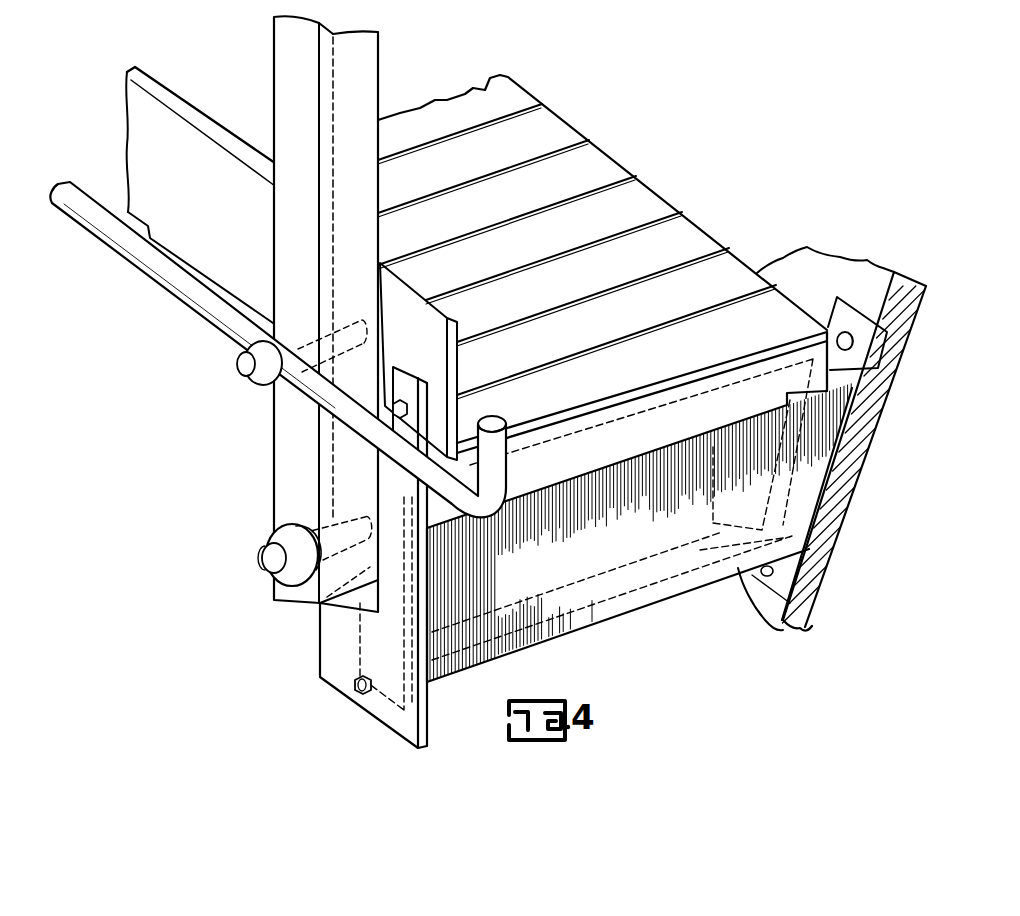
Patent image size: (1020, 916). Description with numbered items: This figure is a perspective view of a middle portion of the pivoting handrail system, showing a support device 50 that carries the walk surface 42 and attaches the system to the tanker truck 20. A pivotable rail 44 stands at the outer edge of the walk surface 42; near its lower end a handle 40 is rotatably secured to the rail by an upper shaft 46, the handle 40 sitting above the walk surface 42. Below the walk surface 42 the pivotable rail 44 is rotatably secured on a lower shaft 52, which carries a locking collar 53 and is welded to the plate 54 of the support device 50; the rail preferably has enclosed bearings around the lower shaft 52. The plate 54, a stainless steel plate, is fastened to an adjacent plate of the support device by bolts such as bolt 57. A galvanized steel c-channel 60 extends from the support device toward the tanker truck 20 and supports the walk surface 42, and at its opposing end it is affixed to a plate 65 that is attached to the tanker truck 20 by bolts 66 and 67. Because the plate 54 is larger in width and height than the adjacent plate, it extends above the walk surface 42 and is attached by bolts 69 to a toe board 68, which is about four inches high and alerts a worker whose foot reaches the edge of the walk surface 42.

The tanker truck 20 is at (820, 267).
The handle 40 is at (190, 304).
The walk surface 42 is at (640, 204).
The pivotable rail 44 is at (367, 110).
The upper shaft 46 is at (288, 340).
The support device 50 is at (710, 613).
The lower shaft 52 is at (265, 552).
The locking collar 53 is at (290, 578).
The plate 54 is at (412, 730).
The bolt 57 is at (352, 690).
The channel 60 is at (460, 656).
The plate 65 is at (848, 356).
The bolt 66 is at (795, 596).
The bolt 67 is at (855, 332).
The toe board 68 is at (181, 120).
The bolt 69 is at (396, 402).